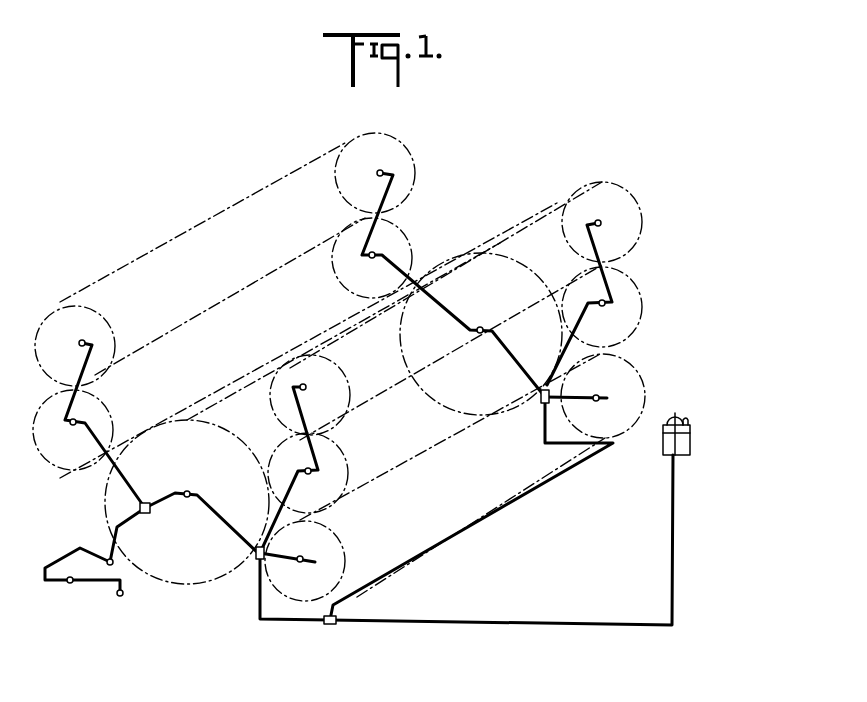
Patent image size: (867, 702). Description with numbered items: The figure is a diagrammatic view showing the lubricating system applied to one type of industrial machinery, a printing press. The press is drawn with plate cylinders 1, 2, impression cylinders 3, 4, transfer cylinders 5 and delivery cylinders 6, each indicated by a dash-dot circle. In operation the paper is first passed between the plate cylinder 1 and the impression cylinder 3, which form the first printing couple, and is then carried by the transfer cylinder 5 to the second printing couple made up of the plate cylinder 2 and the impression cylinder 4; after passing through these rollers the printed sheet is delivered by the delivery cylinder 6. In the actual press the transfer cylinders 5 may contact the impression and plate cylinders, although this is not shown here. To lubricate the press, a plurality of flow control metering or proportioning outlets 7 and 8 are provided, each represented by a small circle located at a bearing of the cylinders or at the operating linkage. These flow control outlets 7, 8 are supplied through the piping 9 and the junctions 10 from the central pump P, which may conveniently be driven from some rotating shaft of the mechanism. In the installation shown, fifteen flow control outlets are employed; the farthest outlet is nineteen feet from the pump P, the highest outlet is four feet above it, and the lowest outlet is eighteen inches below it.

The plate cylinder 1 is at (60, 468).
The plate cylinder 2 is at (347, 458).
The impression cylinder 3 is at (65, 308).
The impression cylinder 4 is at (342, 368).
The transfer cylinder 5 is at (192, 588).
The delivery cylinder 6 is at (342, 532).
The flow control outlet 7 is at (85, 340).
The flow control outlet 8 is at (105, 557).
The piping 9 is at (221, 523).
The junction 10 is at (145, 515).
The central pump P is at (692, 443).